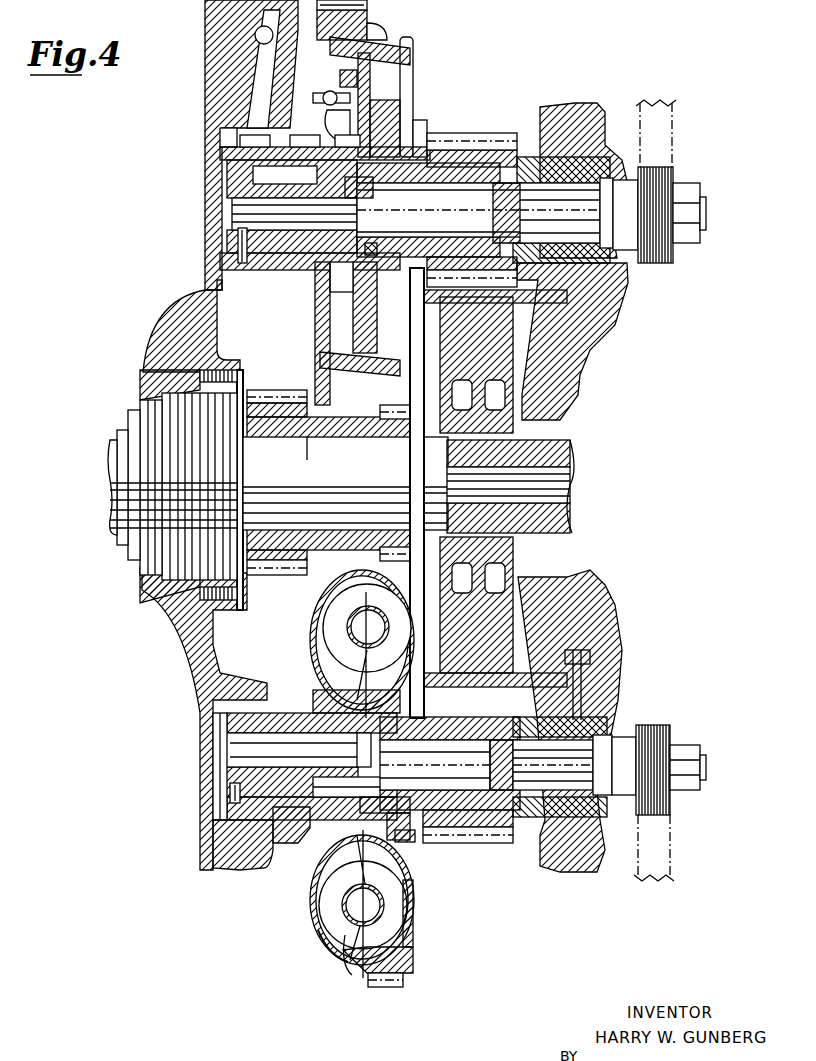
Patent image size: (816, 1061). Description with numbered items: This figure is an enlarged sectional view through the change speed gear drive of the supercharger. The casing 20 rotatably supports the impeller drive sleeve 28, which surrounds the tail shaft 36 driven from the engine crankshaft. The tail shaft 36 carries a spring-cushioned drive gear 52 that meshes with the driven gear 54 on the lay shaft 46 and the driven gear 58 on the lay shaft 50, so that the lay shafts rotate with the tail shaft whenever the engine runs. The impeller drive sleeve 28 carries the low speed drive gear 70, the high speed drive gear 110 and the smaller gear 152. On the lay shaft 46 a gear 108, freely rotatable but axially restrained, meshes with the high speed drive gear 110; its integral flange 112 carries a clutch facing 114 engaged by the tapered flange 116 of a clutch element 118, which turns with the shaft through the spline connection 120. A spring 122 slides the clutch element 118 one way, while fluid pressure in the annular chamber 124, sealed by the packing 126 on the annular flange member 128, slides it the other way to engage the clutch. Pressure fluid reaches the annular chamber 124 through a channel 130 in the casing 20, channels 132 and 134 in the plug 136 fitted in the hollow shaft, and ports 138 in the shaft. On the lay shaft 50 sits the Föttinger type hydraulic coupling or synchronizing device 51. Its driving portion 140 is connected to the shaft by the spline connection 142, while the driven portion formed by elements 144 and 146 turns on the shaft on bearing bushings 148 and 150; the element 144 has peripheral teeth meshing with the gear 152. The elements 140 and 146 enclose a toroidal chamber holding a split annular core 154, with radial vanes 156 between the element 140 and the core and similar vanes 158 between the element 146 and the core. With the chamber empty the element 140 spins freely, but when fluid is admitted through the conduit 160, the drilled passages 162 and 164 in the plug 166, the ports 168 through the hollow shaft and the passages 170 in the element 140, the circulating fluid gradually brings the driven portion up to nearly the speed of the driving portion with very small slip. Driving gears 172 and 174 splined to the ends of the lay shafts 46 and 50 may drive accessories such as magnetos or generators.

The casing 20 is at (205, 137).
The impeller drive sleeve 28 is at (290, 423).
The tail shaft 36 is at (572, 460).
The lay shaft 46 is at (520, 153).
The lay shaft 50 is at (510, 827).
The synchronizing device 51 is at (300, 924).
The drive gear 52 is at (520, 353).
The driven gear 54 is at (473, 133).
The driven gear 58 is at (467, 850).
The low speed drive gear 70 is at (270, 577).
The gear 108 is at (313, 340).
The high speed drive gear 110 is at (337, 550).
The integral flange 112 is at (373, 40).
The clutch facing 114 is at (408, 37).
The tapered flange 116 is at (330, 50).
The clutch element 118 is at (400, 83).
The spline connection 120 is at (433, 160).
The spring 122 is at (430, 127).
The annular chamber 124 is at (337, 130).
The packing 126 is at (340, 78).
The annular flange member 128 is at (350, 98).
The channel 130 is at (248, 82).
The channel 132 is at (237, 205).
The channel 134 is at (395, 206).
The plug 136 is at (236, 246).
The ports 138 is at (372, 250).
The coupling element 140 is at (313, 945).
The spline connection 142 is at (387, 820).
The coupling element 144 is at (311, 887).
The coupling element 146 is at (413, 913).
The bearing bushing 148 is at (303, 830).
The bearing bushing 150 is at (410, 842).
The gear 152 is at (380, 417).
The annular core 154 is at (350, 935).
The radial vanes 156 is at (323, 937).
The vanes 158 is at (413, 937).
The conduit 160 is at (230, 870).
The drilled passage 162 is at (227, 757).
The drilled passage 164 is at (362, 758).
The plug 166 is at (230, 790).
The ports 168 is at (417, 757).
The passages 170 is at (320, 657).
The driving gear 172 is at (653, 267).
The driving gear 174 is at (657, 727).